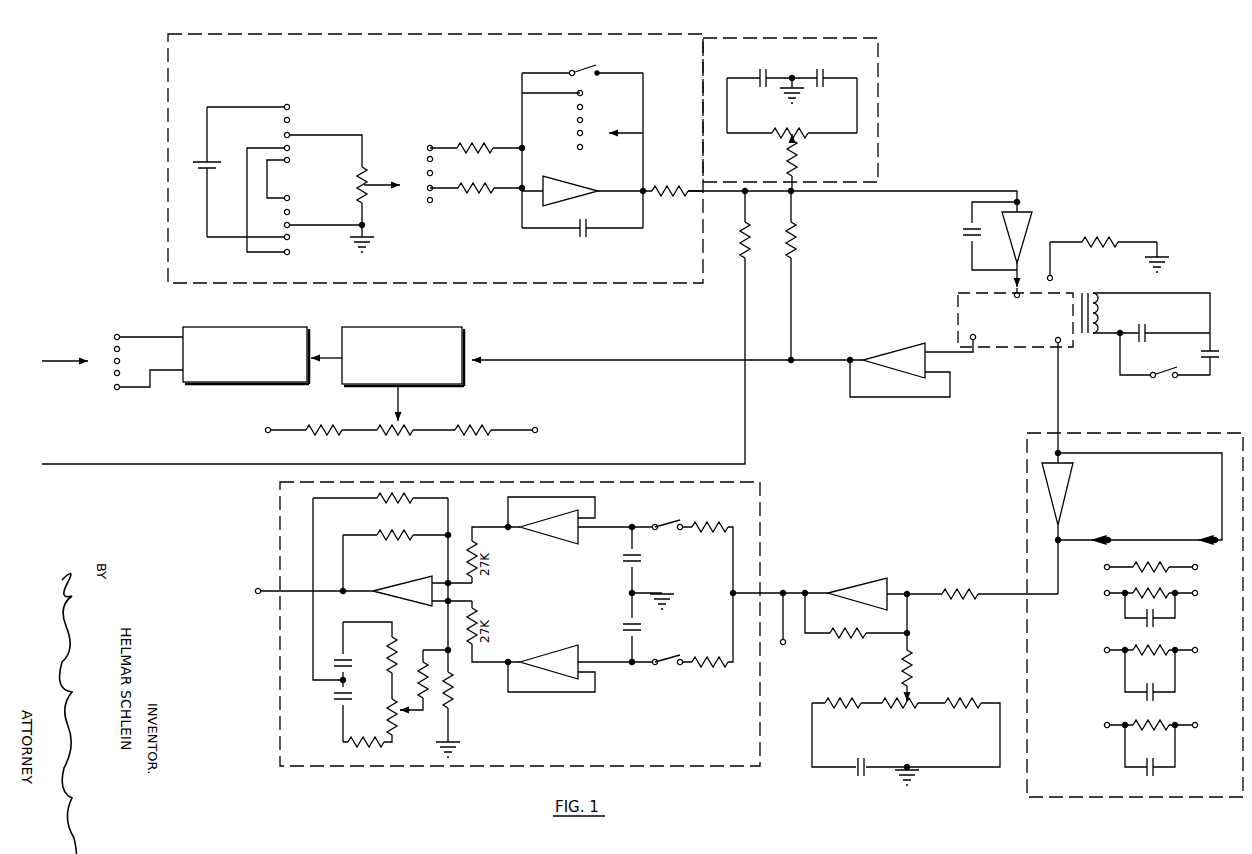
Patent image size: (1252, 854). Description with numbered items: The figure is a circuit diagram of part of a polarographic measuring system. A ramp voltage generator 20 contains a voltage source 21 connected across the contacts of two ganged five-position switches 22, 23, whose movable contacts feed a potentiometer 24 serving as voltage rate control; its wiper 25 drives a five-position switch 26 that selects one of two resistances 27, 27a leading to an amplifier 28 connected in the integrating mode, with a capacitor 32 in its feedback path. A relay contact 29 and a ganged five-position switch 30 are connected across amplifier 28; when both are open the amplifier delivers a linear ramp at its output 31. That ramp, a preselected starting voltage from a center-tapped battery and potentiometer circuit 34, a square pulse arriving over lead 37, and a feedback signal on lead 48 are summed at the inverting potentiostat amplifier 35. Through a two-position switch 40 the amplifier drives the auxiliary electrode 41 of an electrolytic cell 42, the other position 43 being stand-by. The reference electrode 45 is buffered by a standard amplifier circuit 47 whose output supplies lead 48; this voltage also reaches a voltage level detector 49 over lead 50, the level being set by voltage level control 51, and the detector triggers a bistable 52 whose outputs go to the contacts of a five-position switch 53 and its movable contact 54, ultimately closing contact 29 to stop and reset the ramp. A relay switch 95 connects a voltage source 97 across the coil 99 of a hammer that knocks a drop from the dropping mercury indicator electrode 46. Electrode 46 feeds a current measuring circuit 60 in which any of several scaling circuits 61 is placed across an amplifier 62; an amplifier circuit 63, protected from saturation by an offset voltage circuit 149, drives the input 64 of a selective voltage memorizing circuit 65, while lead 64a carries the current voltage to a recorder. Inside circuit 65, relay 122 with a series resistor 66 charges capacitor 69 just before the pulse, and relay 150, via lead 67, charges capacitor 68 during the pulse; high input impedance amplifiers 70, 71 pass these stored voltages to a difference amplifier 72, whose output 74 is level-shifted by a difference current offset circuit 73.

The ramp voltage generator 20 is at (168, 114).
The voltage source 21 is at (209, 162).
The switch 22 is at (310, 120).
The switch 23 is at (308, 240).
The potentiometer 24 is at (364, 168).
The wiper 25 is at (386, 190).
The five-position switch 26 is at (407, 138).
The resistance 27 is at (468, 195).
The resistance 27a is at (469, 143).
The amplifier 28 is at (578, 185).
The relay contact 29 is at (585, 70).
The switch 30 is at (624, 132).
The output 31 is at (648, 194).
The capacitor 32 is at (589, 227).
The circuit 34 is at (878, 107).
The potentiostat amplifier 35 is at (1033, 221).
The lead 37 is at (747, 306).
The two-position switch 40 is at (1014, 272).
The auxiliary electrode 41 is at (1013, 299).
The electrolytic cell 42 is at (958, 306).
The stand-by position 43 is at (1053, 276).
The reference electrode 45 is at (976, 337).
The indicator electrode 46 is at (1056, 338).
The amplifier circuit 47 is at (953, 366).
The lead 48 is at (792, 296).
The detector 49 is at (440, 327).
The lead 50 is at (498, 358).
The voltage level control 51 is at (503, 421).
The bistable 52 is at (249, 328).
The five-position switch 53 is at (121, 331).
The movable contact 54 is at (58, 359).
The current measuring circuit 60 is at (1092, 432).
The scaling circuits 61 is at (1110, 622).
The amplifier 62 is at (1073, 493).
The amplifier circuit 63 is at (841, 586).
The input 64 is at (750, 592).
The lead 64a is at (786, 631).
The selective voltage memorizing circuit 65 is at (763, 524).
The resistor 66 is at (722, 525).
The lead 67 is at (729, 667).
The capacitor 68 is at (625, 620).
The capacitor 69 is at (625, 564).
The high input impedance amplifier 70 is at (549, 653).
The high input impedance amplifier 71 is at (543, 538).
The difference amplifier 72 is at (385, 590).
The difference current offset circuit 73 is at (326, 690).
The output 74 is at (255, 589).
The relay 95 is at (1162, 379).
The voltage source 97 is at (1213, 359).
The coil 99 is at (1110, 308).
The relay 122 is at (660, 523).
The offset voltage circuit 149 is at (829, 771).
The relay 150 is at (666, 668).